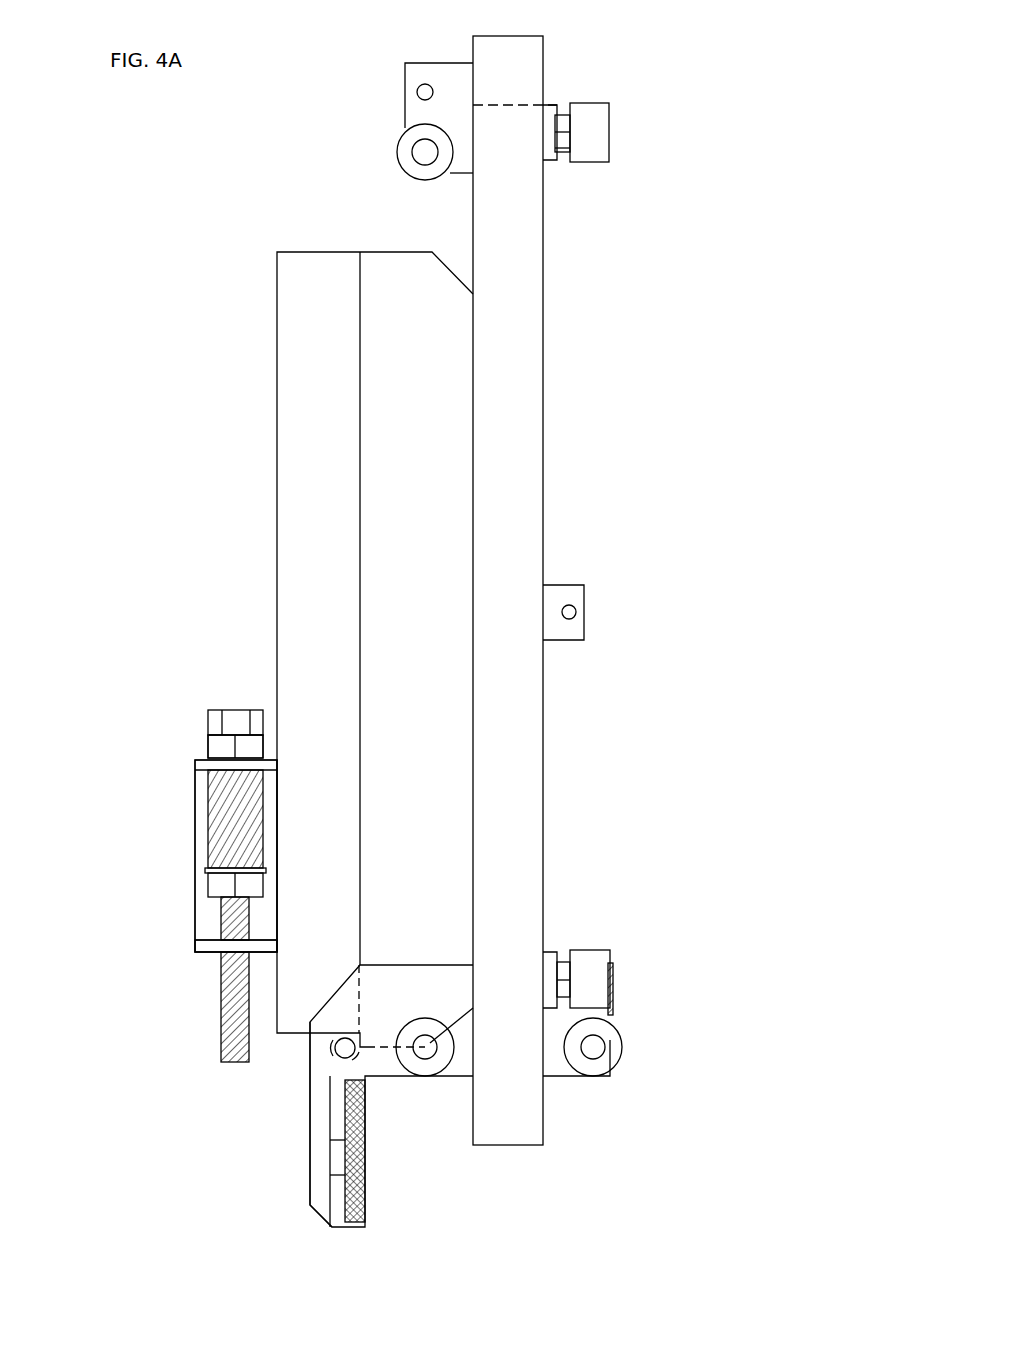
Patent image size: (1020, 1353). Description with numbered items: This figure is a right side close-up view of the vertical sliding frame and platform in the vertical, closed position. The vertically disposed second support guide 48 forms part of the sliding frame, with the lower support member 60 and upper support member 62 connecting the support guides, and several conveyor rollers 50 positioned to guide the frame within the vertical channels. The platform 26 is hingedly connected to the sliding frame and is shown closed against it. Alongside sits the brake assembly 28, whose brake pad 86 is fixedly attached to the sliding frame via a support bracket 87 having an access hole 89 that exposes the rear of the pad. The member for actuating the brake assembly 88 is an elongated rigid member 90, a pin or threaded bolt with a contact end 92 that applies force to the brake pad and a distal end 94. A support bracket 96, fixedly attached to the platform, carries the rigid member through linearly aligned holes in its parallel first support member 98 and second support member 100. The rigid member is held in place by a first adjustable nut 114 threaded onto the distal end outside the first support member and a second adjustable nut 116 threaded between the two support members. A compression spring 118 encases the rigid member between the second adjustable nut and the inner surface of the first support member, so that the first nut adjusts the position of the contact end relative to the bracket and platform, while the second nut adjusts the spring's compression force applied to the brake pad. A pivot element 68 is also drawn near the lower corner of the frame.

The platform 26 is at (275, 428).
The brake assembly 28 is at (165, 1113).
The second support guide 48 is at (528, 36).
The conveyor roller 50 is at (592, 162).
The lower support member 60 is at (613, 1010).
The upper support member 62 is at (405, 83).
The pivot pin 68 is at (335, 1055).
The brake pad 86 is at (365, 1183).
The support bracket 87 is at (310, 1180).
The member for actuating the brake assembly 88 is at (168, 738).
The access hole 89 is at (330, 1162).
The elongated rigid member 90 is at (221, 919).
The contact end 92 is at (221, 1058).
The distal end 94 is at (215, 708).
The support bracket 96 is at (190, 778).
The first support member 98 is at (200, 755).
The second support member 100 is at (205, 952).
The first adjustable nut 114 is at (265, 743).
The second adjustable nut 116 is at (263, 883).
The compression spring 118 is at (195, 822).